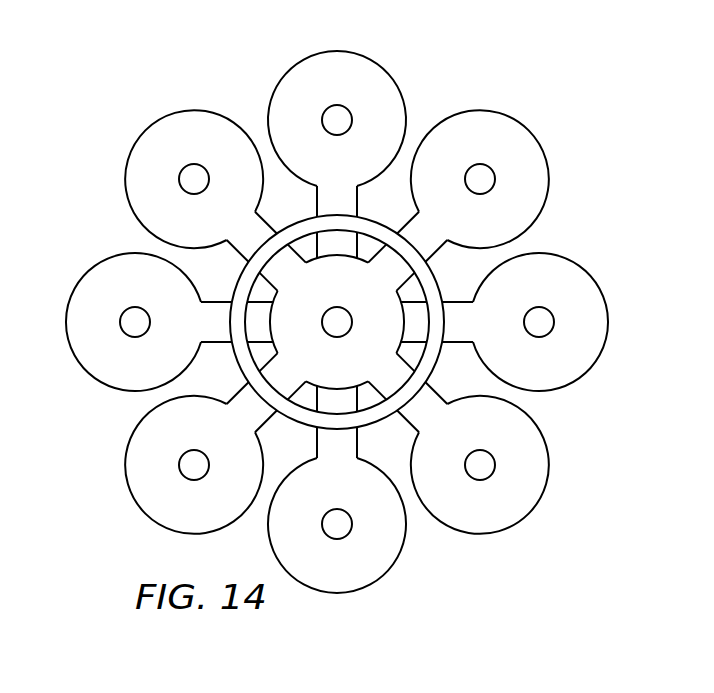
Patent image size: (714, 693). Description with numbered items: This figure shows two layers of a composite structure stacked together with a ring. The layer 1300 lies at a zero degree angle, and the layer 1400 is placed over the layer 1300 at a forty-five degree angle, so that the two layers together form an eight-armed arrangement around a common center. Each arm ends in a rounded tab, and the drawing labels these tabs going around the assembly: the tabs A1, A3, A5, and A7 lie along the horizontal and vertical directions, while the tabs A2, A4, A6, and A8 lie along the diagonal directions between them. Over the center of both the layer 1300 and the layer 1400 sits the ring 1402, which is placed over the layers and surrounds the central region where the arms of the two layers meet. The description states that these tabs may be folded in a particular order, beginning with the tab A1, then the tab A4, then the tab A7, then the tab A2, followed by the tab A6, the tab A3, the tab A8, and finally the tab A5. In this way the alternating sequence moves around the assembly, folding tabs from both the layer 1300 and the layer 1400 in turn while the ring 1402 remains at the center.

The layer 1300 is at (393, 40).
The layer 1400 is at (570, 382).
The ring 1402 is at (290, 223).
The tab A1 is at (154, 322).
The tab A2 is at (212, 199).
The tab A3 is at (337, 140).
The tab A4 is at (461, 199).
The tab A5 is at (520, 322).
The tab A6 is at (461, 446).
The tab A7 is at (337, 504).
The tab A8 is at (213, 446).